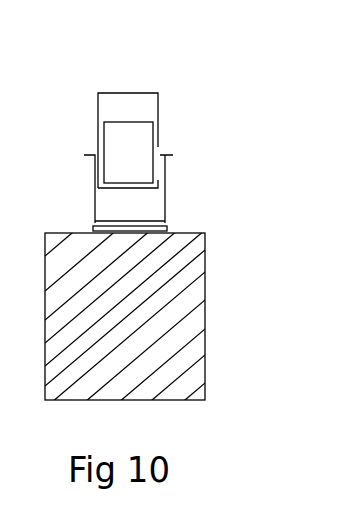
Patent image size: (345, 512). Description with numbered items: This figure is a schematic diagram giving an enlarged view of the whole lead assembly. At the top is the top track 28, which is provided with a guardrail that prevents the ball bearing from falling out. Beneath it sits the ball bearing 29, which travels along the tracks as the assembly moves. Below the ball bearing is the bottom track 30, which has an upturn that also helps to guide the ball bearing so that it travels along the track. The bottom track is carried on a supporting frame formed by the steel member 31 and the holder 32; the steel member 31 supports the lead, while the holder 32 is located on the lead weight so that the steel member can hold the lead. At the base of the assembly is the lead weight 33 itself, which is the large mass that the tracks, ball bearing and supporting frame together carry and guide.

The top track 28 is at (158, 102).
The ball bearing 29 is at (153, 148).
The bottom track 30 is at (165, 168).
The steel member 31 is at (167, 200).
The holder 32 is at (150, 213).
The lead weight 33 is at (207, 305).